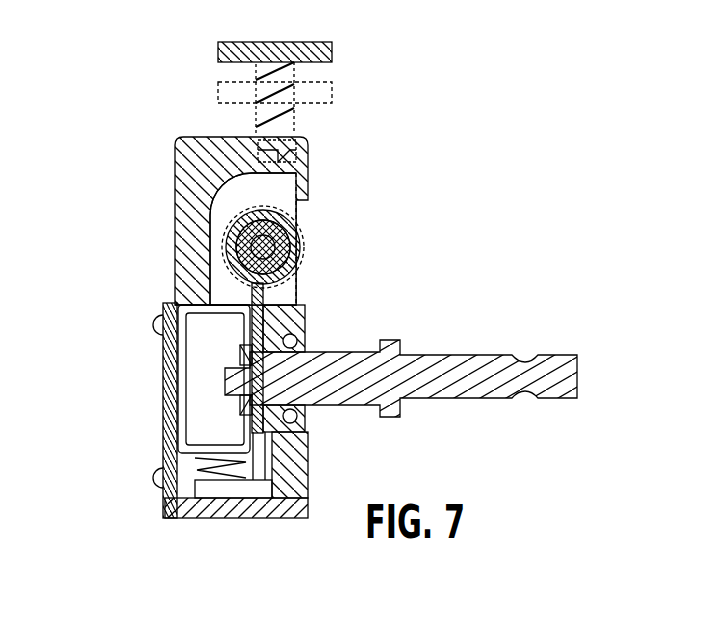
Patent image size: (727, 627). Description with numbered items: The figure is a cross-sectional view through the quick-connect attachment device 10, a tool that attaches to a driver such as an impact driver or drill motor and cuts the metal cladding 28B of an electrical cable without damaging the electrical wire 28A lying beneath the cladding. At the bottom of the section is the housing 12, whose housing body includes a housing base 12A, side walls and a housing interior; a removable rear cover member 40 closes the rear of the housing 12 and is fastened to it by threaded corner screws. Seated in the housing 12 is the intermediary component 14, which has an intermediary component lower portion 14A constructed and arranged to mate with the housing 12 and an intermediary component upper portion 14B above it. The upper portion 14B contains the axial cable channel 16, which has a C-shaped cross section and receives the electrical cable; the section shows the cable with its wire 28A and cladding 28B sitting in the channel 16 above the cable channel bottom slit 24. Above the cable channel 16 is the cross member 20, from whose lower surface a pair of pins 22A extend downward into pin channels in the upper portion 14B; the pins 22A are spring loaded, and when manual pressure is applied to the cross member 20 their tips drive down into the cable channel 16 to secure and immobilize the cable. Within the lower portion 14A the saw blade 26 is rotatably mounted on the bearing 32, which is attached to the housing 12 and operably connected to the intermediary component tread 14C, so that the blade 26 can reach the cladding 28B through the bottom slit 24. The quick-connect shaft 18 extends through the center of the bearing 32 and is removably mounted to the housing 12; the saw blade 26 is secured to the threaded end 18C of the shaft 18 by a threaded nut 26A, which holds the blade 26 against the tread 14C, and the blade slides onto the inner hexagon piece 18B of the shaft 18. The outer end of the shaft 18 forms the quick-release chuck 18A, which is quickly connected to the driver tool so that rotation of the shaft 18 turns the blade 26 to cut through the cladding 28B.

The quick-connect attachment device 10 is at (435, 120).
The housing 12 is at (235, 510).
The housing base 12A is at (236, 549).
The intermediary component 14 is at (160, 221).
The intermediary component lower portion 14A is at (168, 480).
The intermediary component upper portion 14B is at (110, 225).
The intermediary component tread 14C is at (207, 260).
The cable channel 16 is at (234, 202).
The quick-connect shaft 18 is at (476, 366).
The quick-release chuck 18A is at (603, 356).
The inner hexagon piece 18B is at (576, 412).
The threaded end 18C is at (127, 382).
The cross member 20 is at (300, 42).
The pins 22A is at (266, 118).
The cable channel bottom slit 24 is at (265, 293).
The saw blade 26 is at (250, 302).
The threaded nut 26A is at (160, 417).
The electrical wire 28A is at (242, 240).
The metal cladding 28B is at (286, 236).
The bearing 32 is at (292, 412).
The rear cover member 40 is at (165, 408).